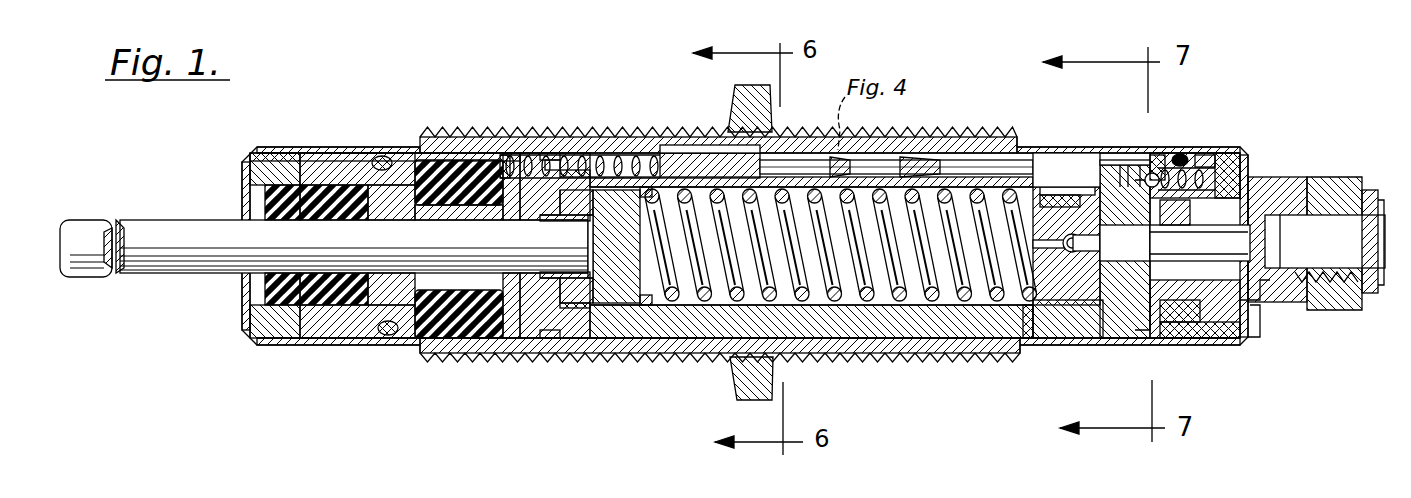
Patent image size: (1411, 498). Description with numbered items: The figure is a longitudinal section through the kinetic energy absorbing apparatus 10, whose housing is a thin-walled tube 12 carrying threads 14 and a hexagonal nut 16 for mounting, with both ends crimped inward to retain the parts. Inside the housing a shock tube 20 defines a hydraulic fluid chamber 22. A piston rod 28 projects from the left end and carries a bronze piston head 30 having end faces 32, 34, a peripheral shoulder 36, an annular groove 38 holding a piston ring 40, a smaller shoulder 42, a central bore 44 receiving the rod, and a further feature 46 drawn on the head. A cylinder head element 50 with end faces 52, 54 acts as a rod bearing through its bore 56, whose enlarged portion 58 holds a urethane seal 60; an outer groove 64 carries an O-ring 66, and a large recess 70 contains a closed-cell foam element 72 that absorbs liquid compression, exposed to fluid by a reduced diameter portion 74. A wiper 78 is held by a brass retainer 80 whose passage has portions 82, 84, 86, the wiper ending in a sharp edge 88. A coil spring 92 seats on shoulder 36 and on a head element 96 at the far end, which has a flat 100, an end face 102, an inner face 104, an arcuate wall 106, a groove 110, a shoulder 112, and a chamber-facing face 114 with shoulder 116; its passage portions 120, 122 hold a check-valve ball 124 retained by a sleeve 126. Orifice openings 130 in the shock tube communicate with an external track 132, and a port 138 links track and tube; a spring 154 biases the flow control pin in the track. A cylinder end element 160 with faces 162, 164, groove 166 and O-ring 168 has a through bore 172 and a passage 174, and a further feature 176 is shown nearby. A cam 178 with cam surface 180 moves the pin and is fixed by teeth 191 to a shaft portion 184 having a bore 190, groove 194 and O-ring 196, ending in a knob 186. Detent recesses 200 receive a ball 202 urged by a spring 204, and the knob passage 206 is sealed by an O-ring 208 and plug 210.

The kinetic energy absorbing apparatus 10 is at (240, 352).
The housing 12 is at (258, 345).
The threads 14 is at (455, 362).
The hexagonal nut 16 is at (738, 392).
The shock tube 20 is at (868, 330).
The chamber 22 is at (905, 345).
The piston rod 28 is at (125, 273).
The piston head 30 is at (575, 190).
The axial end face 32 is at (668, 310).
The axial end face 34 is at (545, 340).
The shoulder 36 is at (645, 305).
The annular groove 38 is at (590, 305).
The piston ring 40 is at (620, 303).
The annular shoulder 42 is at (548, 300).
The central axial bore 44 is at (568, 310).
The groove 46 is at (562, 305).
The cylinder head element 50 is at (368, 300).
The axial end face 52 is at (515, 338).
The axial end face 54 is at (330, 310).
The axial bore 56 is at (388, 335).
The enlarged diameter portion 58 is at (330, 190).
The seal element 60 is at (375, 158).
The annular groove 64 is at (360, 160).
The O-ring seal 66 is at (398, 175).
The annular recess 70 is at (445, 165).
The compression absorbing element 72 is at (465, 160).
The reduced diameter portion 74 is at (530, 160).
The wiper element 78 is at (265, 318).
The retainer element 80 is at (265, 170).
The first diameter portion 82 is at (296, 158).
The second larger diameter portion 84 is at (282, 340).
The third intermediate diameter portion 86 is at (262, 200).
The sharp edge portion 88 is at (262, 290).
The coil spring 92 is at (842, 300).
The head element 96 is at (1075, 160).
The flat 100 is at (1095, 175).
The first axial end face 102 is at (1170, 345).
The inner face 104 is at (1110, 163).
The arcuate wall portion 106 is at (1105, 305).
The annular groove 110 is at (1092, 252).
The shoulder 112 is at (1050, 210).
The axial end face 114 is at (1028, 340).
The annular shoulder 116 is at (1045, 300).
The first diameter portion 120 is at (1120, 175).
The larger diameter portion 122 is at (1072, 255).
The ball element 124 is at (1118, 310).
The sleeve element 126 is at (1040, 330).
The orifice openings 130 is at (690, 170).
The track 132 is at (625, 153).
The port 138 is at (552, 160).
The coil spring 154 is at (590, 160).
The cylinder end element 160 is at (1245, 302).
The axial end face 162 is at (1180, 322).
The axial end face 164 is at (1262, 305).
The annular groove 166 is at (1185, 155).
The O-ring 168 is at (1182, 170).
The through bore 172 is at (925, 165).
The passage 174 is at (1225, 160).
The upper mounting lug 176 is at (730, 135).
The cam element 178 is at (1128, 175).
The cam surface 180 is at (1140, 175).
The shaft portion 184 is at (1258, 230).
The knob portion 186 is at (1328, 177).
The through bore 190 is at (1292, 300).
The external teeth 191 is at (1145, 330).
The annular groove 194 is at (1190, 243).
The O-ring 196 is at (1175, 226).
The recesses 200 is at (1210, 338).
The ball element 202 is at (1158, 160).
The coil spring 204 is at (1205, 155).
The passage 206 is at (1285, 240).
The O-ring 208 is at (1368, 190).
The plug element 210 is at (1384, 205).